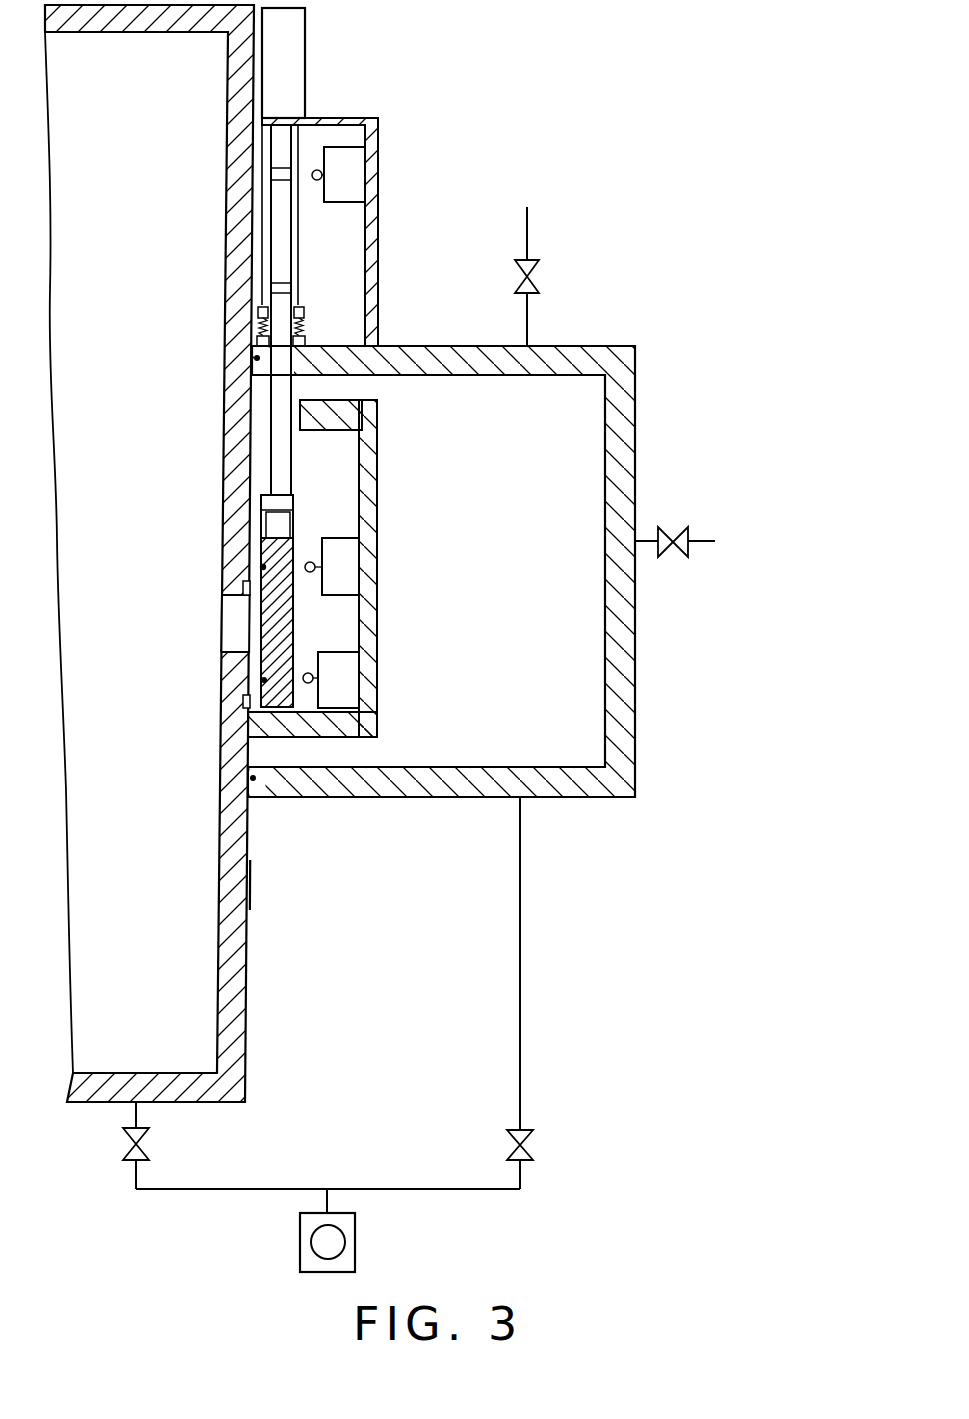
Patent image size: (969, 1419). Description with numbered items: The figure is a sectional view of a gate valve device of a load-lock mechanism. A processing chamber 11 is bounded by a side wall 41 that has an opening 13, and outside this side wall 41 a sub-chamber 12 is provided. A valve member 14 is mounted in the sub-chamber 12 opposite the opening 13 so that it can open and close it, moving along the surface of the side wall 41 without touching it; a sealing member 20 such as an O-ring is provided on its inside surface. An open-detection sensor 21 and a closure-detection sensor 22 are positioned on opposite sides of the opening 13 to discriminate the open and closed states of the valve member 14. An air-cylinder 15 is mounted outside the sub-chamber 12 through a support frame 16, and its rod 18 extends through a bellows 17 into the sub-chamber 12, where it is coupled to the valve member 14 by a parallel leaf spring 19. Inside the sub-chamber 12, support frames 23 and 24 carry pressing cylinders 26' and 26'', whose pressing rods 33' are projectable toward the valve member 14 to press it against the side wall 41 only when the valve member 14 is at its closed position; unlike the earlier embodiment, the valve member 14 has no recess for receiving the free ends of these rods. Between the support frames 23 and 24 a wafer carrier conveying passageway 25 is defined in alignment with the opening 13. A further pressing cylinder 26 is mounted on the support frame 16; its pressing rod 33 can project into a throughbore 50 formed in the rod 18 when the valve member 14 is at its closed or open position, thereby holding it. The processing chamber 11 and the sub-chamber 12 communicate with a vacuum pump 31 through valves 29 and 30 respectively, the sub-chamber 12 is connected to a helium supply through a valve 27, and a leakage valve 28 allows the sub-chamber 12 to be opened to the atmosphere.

The processing chamber 11 is at (187, 1090).
The sub-chamber 12 is at (608, 790).
The opening 13 is at (222, 630).
The valve member 14 is at (272, 628).
The air-cylinder 15 is at (298, 40).
The support frame 16 is at (380, 127).
The bellows 17 is at (303, 309).
The rod 18 is at (295, 386).
The parallel leaf spring 19 is at (293, 498).
The sealing member 20 is at (262, 567).
The open-detection sensor 21 is at (240, 584).
The closure-detection sensor 22 is at (241, 702).
The support frame 23 is at (378, 455).
The support frame 24 is at (372, 710).
The wafer carrier conveying passageway 25 is at (358, 610).
The pressing cylinder 26 is at (383, 174).
The pressing cylinder 26' is at (385, 565).
The pressing cylinder 26'' is at (385, 680).
The valve 27 is at (540, 268).
The leakage valve 28 is at (688, 532).
The valve 29 is at (121, 1136).
The valve 30 is at (535, 1132).
The vacuum pump 31 is at (357, 1223).
The pressing rod 33 is at (319, 205).
The pressing rod 33' is at (373, 585).
The side wall 41 is at (225, 887).
The throughbore 50 is at (277, 175).